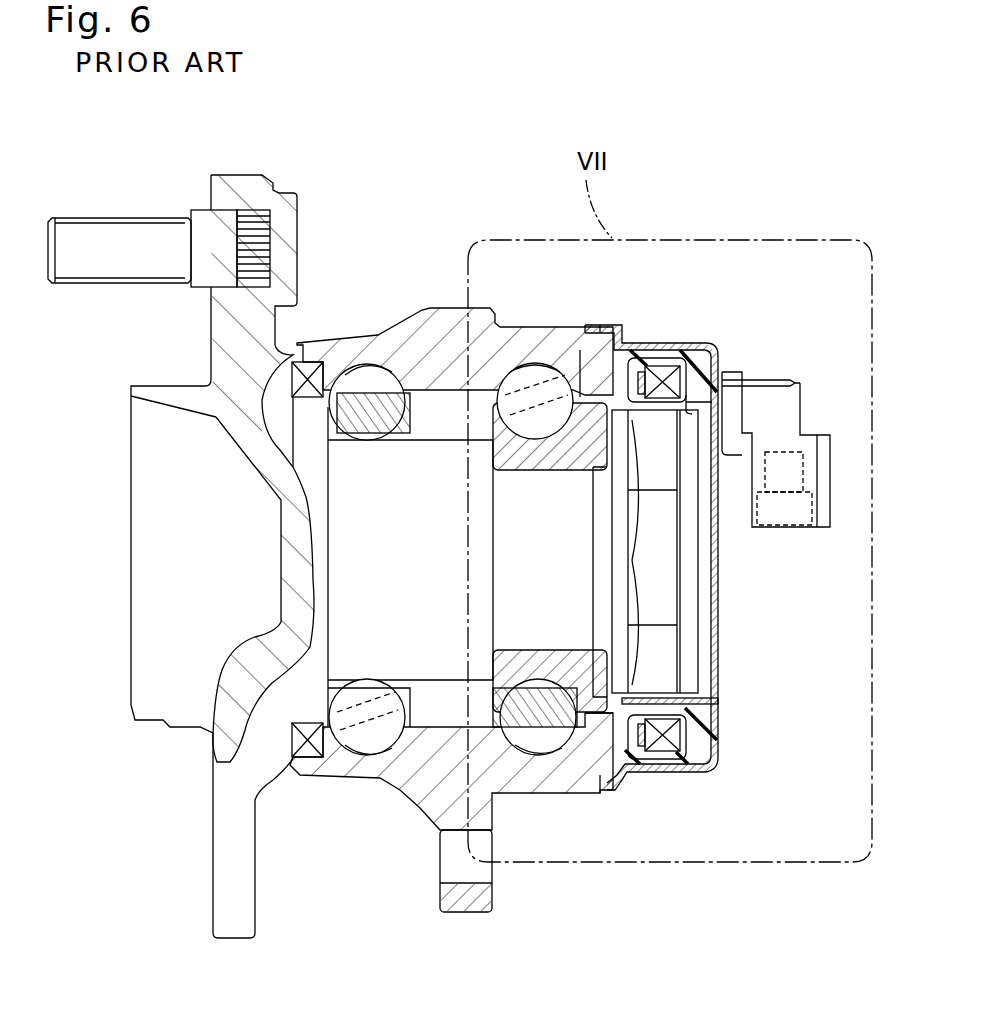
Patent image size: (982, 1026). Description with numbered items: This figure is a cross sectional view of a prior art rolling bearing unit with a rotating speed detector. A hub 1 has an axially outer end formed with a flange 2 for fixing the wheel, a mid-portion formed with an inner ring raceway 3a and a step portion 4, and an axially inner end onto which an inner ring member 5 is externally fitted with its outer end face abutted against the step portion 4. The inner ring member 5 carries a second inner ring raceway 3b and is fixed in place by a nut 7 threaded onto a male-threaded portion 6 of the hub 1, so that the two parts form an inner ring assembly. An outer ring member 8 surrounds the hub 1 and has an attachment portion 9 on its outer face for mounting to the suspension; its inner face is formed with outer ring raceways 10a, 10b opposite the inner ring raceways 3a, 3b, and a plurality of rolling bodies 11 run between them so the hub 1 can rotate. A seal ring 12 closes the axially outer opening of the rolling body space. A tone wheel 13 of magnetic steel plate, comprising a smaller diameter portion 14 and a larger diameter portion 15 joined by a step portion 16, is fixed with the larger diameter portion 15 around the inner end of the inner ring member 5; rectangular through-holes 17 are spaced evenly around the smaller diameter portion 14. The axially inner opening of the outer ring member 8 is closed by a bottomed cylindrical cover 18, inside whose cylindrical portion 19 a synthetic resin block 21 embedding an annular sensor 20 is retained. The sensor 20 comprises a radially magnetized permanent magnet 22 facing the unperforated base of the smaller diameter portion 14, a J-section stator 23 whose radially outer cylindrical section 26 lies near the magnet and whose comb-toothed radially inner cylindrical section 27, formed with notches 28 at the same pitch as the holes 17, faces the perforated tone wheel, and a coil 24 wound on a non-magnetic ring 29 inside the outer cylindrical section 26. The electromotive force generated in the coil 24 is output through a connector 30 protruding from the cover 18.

The hub 1 is at (350, 563).
The flange 2 is at (225, 355).
The inner ring raceway 3a is at (340, 695).
The inner ring raceway 3b is at (543, 433).
The step portion 4 is at (470, 417).
The inner ring member 5 is at (560, 470).
The male-threaded portion 6 is at (622, 565).
The nut 7 is at (667, 553).
The outer ring member 8 is at (535, 370).
The attachment portion 9 is at (462, 905).
The outer ring raceway 10a is at (372, 748).
The outer ring raceway 10b is at (538, 748).
The rolling bodies 11 is at (382, 395).
The seal ring 12 is at (310, 365).
The tone wheel 13 is at (710, 690).
The smaller diameter portion 14 is at (700, 683).
The larger diameter portion 15 is at (570, 758).
The step portion 16 is at (574, 350).
The through-holes 17 is at (797, 385).
The cover 18 is at (722, 620).
The cylindrical portion 19 is at (700, 345).
The annular sensor 20 is at (660, 752).
The synthetic resin block 21 is at (692, 383).
The permanent magnet 22 is at (615, 332).
The stator 23 is at (690, 752).
The coil 24 is at (740, 350).
The radially outer cylindrical section 26 is at (658, 368).
The radially inner cylindrical section 27 is at (710, 712).
The notches 28 is at (680, 407).
The non-magnetic ring 29 is at (690, 752).
The connector 30 is at (777, 428).